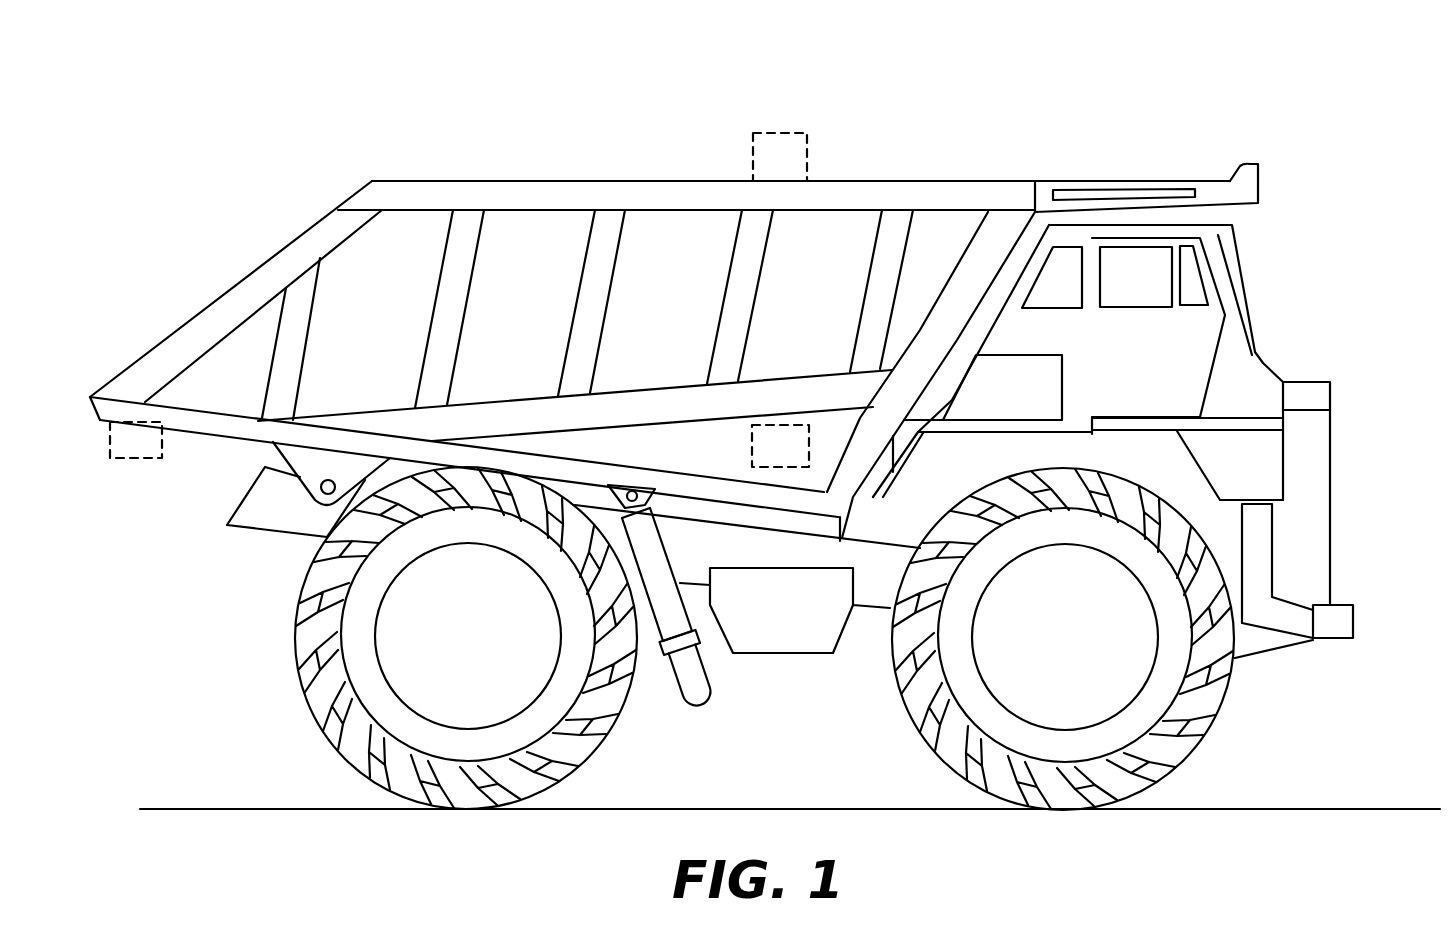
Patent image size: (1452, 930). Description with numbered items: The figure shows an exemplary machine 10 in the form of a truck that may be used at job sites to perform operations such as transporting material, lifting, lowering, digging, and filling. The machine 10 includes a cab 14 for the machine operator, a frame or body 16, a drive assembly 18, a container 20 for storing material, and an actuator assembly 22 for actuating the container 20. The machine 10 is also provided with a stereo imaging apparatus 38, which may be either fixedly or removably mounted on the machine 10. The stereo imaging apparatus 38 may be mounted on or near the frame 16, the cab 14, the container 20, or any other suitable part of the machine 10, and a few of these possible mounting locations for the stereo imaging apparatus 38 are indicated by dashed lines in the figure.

The machine 10 is at (1299, 123).
The cab 14 is at (1235, 268).
The frame or body 16 is at (884, 588).
The drive assembly 18 is at (302, 612).
The container 20 is at (545, 294).
The actuator assembly 22 is at (669, 620).
The stereo imaging apparatus 38 is at (800, 130).